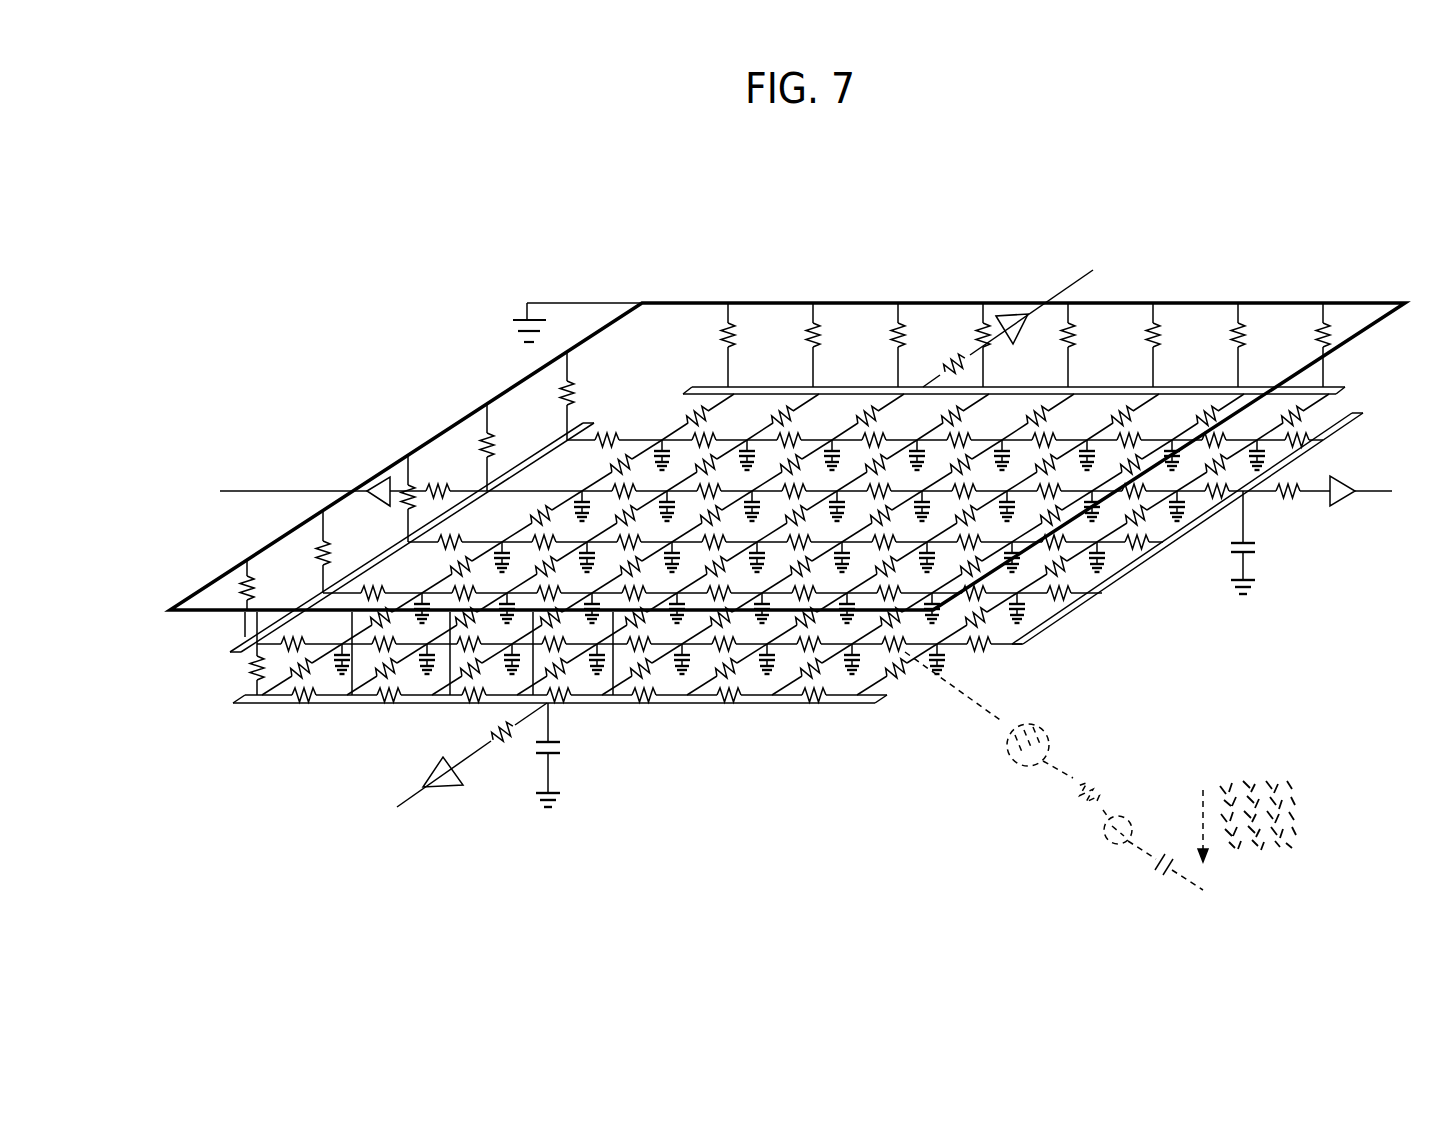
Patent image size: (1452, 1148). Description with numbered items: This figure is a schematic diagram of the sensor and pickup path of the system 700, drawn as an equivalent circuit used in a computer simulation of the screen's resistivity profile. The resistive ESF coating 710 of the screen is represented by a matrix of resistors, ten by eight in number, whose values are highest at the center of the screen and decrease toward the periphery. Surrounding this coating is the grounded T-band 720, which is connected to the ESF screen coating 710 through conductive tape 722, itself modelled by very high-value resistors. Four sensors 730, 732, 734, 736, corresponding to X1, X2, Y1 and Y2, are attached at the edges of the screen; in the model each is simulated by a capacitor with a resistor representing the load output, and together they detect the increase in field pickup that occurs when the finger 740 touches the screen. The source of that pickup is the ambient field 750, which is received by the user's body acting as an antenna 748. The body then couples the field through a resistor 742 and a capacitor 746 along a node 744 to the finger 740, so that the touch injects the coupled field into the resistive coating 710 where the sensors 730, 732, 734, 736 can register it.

The position sensing apparatus 700 is at (403, 254).
The resistive ESF coating 710 is at (600, 505).
The grounded T-band 720 is at (677, 303).
The conductive tape 722 is at (735, 337).
The sensor 730 is at (327, 498).
The sensor 732 is at (1319, 535).
The sensor 734 is at (478, 788).
The sensor 736 is at (1056, 303).
The finger 740 is at (1047, 730).
The resistor 742 is at (1077, 790).
The coupling node 744 is at (1113, 843).
The capacitor 746 is at (1177, 860).
The antenna 748 is at (1191, 816).
The ambient field 750 is at (1293, 803).